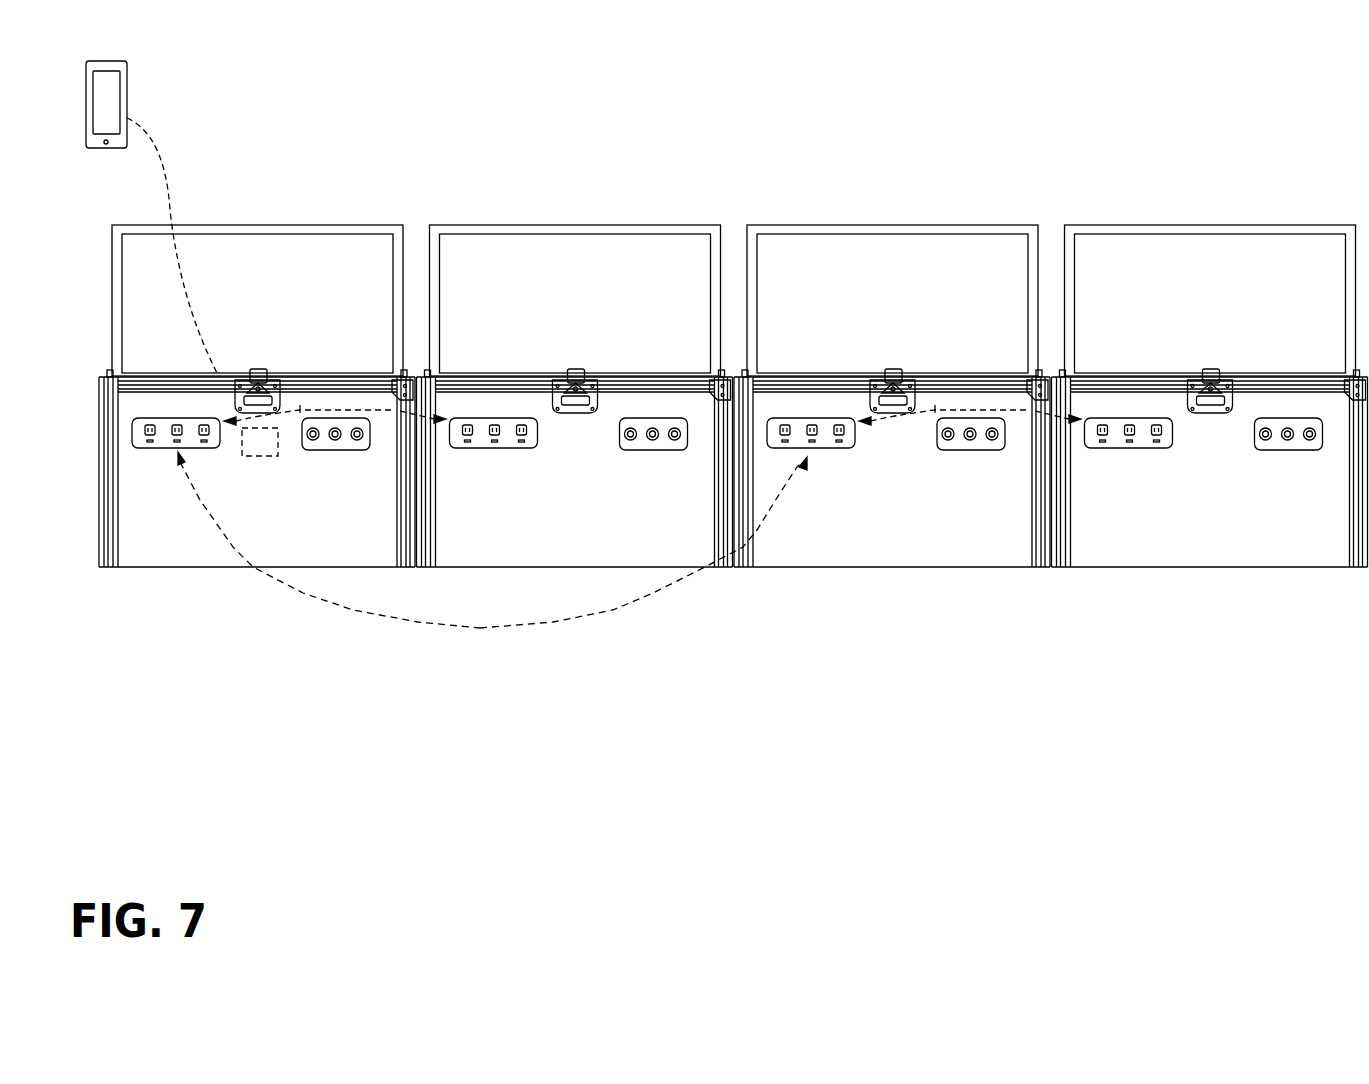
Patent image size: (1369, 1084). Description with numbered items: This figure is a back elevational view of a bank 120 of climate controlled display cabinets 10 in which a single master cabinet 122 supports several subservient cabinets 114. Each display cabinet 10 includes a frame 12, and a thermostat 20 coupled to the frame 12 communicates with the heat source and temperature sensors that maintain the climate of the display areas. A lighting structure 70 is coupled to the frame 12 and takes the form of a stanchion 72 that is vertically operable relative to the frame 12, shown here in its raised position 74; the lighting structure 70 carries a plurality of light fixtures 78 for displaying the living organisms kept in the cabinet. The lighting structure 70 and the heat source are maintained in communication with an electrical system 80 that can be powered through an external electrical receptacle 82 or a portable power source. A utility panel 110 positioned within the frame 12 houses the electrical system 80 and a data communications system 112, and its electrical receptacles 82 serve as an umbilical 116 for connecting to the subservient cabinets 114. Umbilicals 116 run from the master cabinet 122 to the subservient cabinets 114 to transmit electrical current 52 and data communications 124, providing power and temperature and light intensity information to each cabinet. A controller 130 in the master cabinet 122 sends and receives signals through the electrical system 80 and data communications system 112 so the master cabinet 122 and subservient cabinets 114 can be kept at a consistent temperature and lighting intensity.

The climate controlled display cabinet 10 is at (339, 212).
The frame 12 is at (108, 447).
The thermostat 20 is at (339, 466).
The electrical current 52 is at (481, 642).
The lighting structure 70 is at (262, 222).
The stanchion 72 is at (608, 232).
The raised position 74 is at (108, 239).
The light fixtures 78 is at (899, 245).
The electrical system 80 is at (175, 405).
The electrical receptacle 82 is at (128, 427).
The utility panel 110 is at (128, 470).
The data communications system 112 is at (144, 462).
The subservient cabinet 114 is at (833, 601).
The umbilical 116 is at (302, 407).
The bank 120 is at (758, 186).
The master cabinet 122 is at (217, 578).
The data communications 124 is at (603, 603).
The controller 130 is at (261, 468).